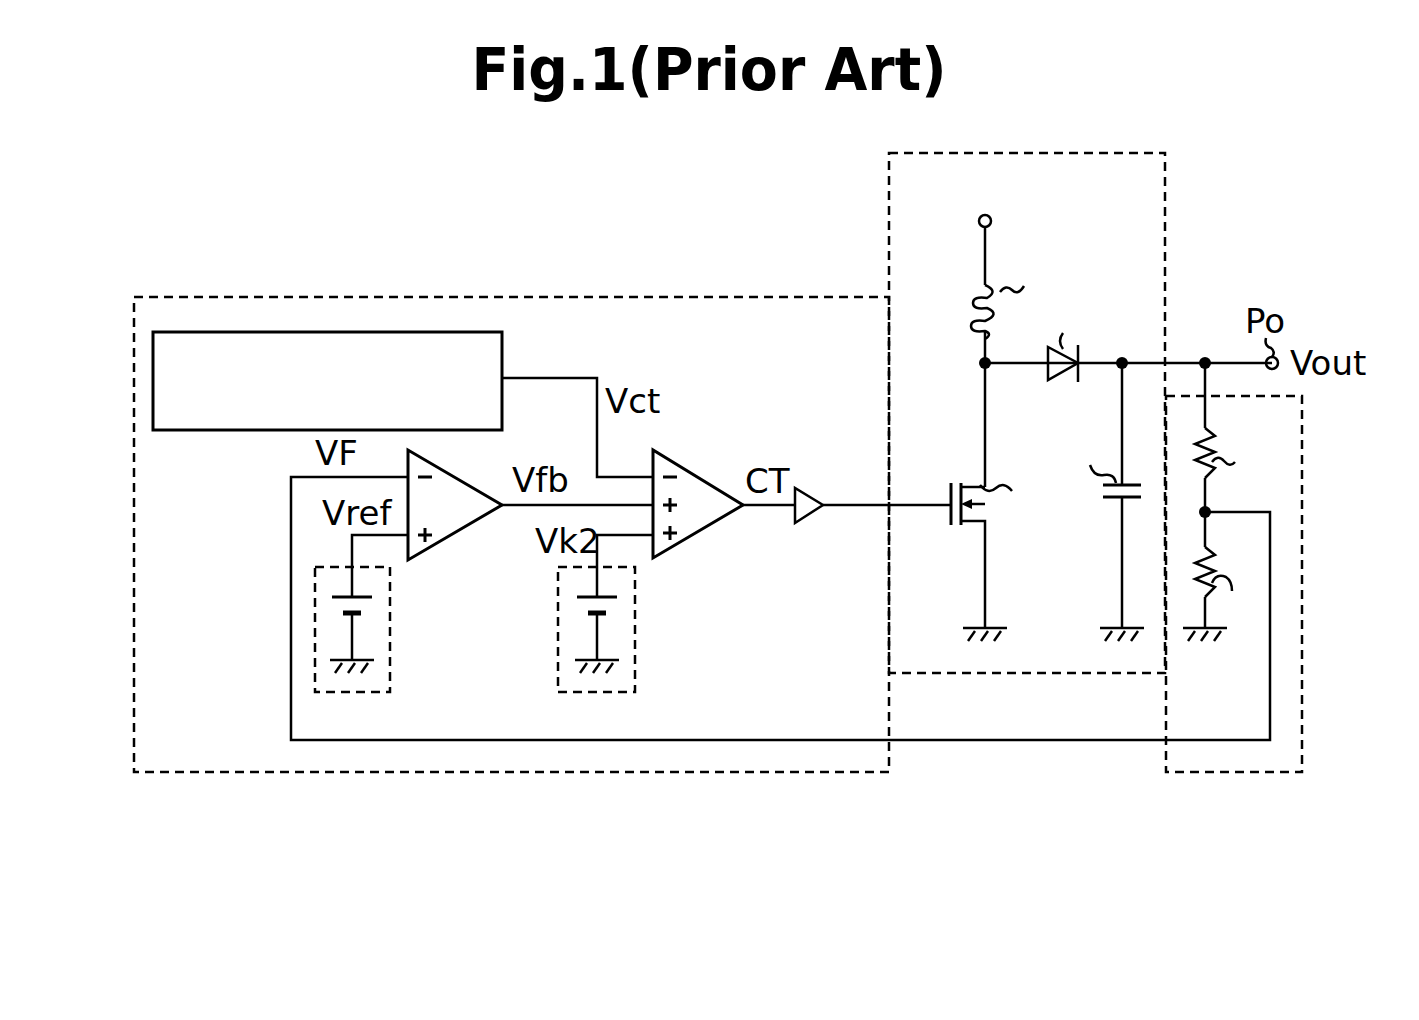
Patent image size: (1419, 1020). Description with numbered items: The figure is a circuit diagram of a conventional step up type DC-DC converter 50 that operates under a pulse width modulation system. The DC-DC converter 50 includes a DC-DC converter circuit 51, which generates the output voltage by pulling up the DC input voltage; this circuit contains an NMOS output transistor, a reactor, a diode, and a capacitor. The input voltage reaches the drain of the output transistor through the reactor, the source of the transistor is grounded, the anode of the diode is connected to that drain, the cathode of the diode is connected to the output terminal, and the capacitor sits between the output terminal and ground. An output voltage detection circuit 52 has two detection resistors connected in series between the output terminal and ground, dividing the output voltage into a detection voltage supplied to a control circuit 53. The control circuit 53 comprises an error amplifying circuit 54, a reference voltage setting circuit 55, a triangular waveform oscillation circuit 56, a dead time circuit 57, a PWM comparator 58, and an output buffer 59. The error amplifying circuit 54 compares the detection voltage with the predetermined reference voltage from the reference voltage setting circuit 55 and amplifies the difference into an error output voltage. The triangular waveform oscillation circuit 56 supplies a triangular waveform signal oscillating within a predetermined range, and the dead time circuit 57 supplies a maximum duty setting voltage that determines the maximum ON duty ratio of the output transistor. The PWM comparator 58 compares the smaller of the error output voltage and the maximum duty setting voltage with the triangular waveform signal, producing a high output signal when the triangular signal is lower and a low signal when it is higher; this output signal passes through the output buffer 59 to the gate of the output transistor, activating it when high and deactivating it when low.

The step up type DC-DC converter 50 is at (782, 252).
The DC-DC converter circuit 51 is at (1166, 185).
The output voltage detection circuit 52 is at (1303, 548).
The control circuit 53 is at (607, 297).
The error amplifying circuit 54 is at (463, 533).
The reference voltage setting circuit 55 is at (390, 640).
The triangular waveform oscillation circuit 56 is at (502, 348).
The dead time circuit 57 is at (635, 640).
The PWM comparator 58 is at (698, 476).
The output buffer 59 is at (812, 515).